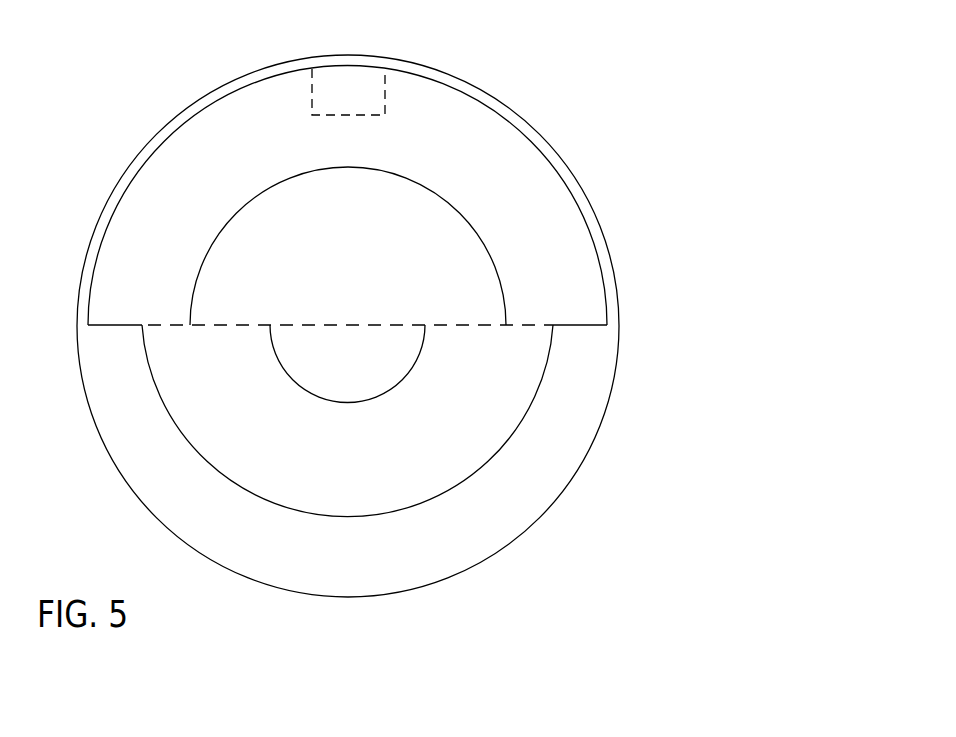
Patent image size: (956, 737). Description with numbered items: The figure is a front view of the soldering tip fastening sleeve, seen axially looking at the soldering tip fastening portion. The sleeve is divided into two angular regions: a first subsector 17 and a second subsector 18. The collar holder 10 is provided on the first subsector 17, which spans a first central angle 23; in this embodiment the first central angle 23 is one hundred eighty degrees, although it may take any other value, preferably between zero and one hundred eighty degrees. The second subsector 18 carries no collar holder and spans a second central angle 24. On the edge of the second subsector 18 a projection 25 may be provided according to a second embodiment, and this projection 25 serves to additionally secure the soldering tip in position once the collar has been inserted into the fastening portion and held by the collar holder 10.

The collar holder 10 is at (530, 483).
The first subsector 17 is at (359, 466).
The second subsector 18 is at (237, 173).
The first central angle 23 is at (305, 365).
The second central angle 24 is at (418, 213).
The projection 25 is at (348, 85).